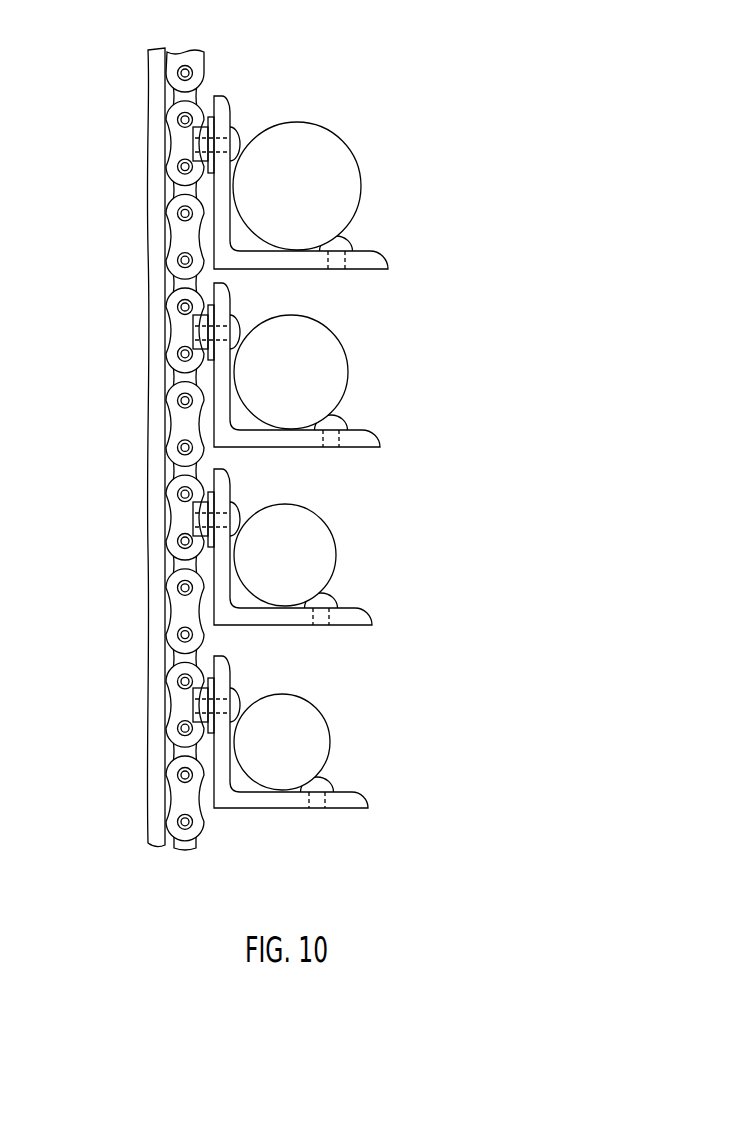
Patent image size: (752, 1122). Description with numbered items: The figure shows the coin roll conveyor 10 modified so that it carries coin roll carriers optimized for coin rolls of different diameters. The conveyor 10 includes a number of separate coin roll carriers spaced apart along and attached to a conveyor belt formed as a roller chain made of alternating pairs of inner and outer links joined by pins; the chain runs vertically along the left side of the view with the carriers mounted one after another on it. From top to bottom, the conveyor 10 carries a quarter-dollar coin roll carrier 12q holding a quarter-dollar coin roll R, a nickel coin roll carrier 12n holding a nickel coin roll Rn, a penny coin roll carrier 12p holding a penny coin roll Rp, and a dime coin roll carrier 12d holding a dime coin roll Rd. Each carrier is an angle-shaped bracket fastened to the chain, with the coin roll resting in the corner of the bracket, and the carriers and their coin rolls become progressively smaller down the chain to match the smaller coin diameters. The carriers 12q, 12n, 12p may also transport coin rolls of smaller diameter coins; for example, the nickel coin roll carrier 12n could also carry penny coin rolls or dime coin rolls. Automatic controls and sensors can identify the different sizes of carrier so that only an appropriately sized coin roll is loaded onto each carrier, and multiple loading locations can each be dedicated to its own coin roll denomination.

The coin roll conveyor 10 is at (89, 58).
The quarter-dollar coin roll R is at (330, 131).
The nickel coin roll Rn is at (331, 332).
The penny coin roll Rp is at (319, 516).
The dime coin roll Rd is at (315, 707).
The quarter-dollar coin roll carrier 12q is at (358, 251).
The nickel coin roll carrier 12n is at (352, 430).
The penny coin roll carrier 12p is at (345, 608).
The dime coin roll carrier 12d is at (340, 792).